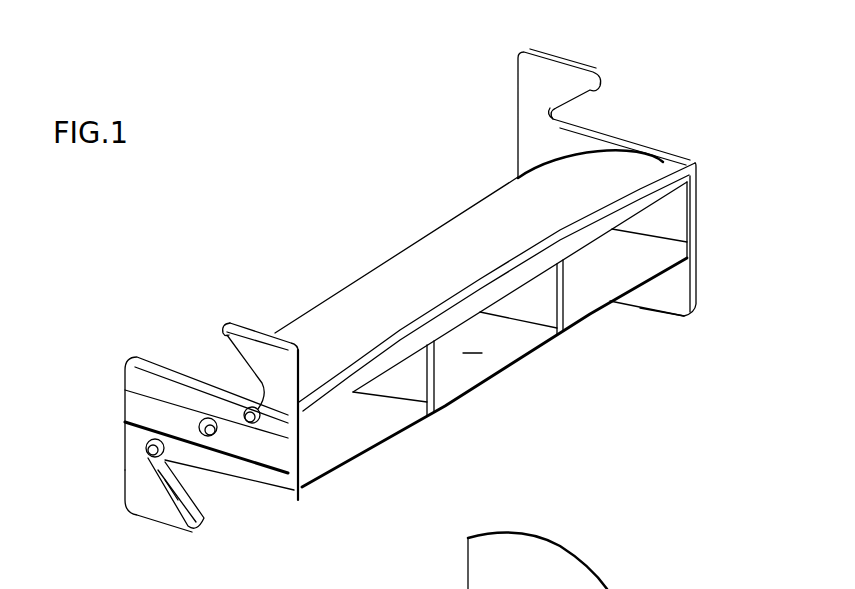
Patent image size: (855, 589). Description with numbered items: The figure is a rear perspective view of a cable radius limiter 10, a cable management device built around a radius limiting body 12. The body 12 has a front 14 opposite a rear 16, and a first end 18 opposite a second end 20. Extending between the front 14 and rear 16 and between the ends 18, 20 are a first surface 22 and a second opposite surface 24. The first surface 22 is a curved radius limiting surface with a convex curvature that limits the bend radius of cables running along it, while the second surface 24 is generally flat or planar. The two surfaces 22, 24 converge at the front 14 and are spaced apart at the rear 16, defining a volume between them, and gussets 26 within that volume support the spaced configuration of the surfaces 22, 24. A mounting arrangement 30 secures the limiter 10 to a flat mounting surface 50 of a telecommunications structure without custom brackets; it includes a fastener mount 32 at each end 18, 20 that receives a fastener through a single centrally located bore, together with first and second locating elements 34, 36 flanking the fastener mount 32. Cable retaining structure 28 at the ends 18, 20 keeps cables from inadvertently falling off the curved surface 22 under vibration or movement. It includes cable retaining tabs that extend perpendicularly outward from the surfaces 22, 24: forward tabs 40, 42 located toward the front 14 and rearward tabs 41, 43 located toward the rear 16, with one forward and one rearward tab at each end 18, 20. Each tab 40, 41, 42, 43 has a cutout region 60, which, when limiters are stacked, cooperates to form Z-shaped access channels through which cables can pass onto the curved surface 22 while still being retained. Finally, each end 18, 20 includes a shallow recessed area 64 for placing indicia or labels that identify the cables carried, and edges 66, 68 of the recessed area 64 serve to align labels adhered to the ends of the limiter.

The cable radius limiter 10 is at (298, 124).
The radius limiting body 12 is at (700, 133).
The front 14 is at (310, 212).
The rear 16 is at (538, 412).
The first end 18 is at (90, 440).
The second end 20 is at (712, 213).
The first surface 22 is at (527, 212).
The second opposite surface 24 is at (304, 490).
The gussets 26 is at (543, 295).
The cable retaining structure 28 is at (640, 68).
The mounting arrangement 30 is at (215, 493).
The fastener mount 32 is at (211, 436).
The first locating element 34 is at (148, 452).
The second locating element 36 is at (256, 406).
The forward tab 40 is at (558, 72).
The rearward tab 41 is at (243, 342).
The forward tab 42 is at (152, 517).
The rearward tab 43 is at (673, 300).
The mounting surface 50 is at (492, 565).
The cutout region 60 is at (553, 115).
The recessed area 64 is at (278, 446).
The edge 66 is at (137, 393).
The edge 68 is at (123, 420).